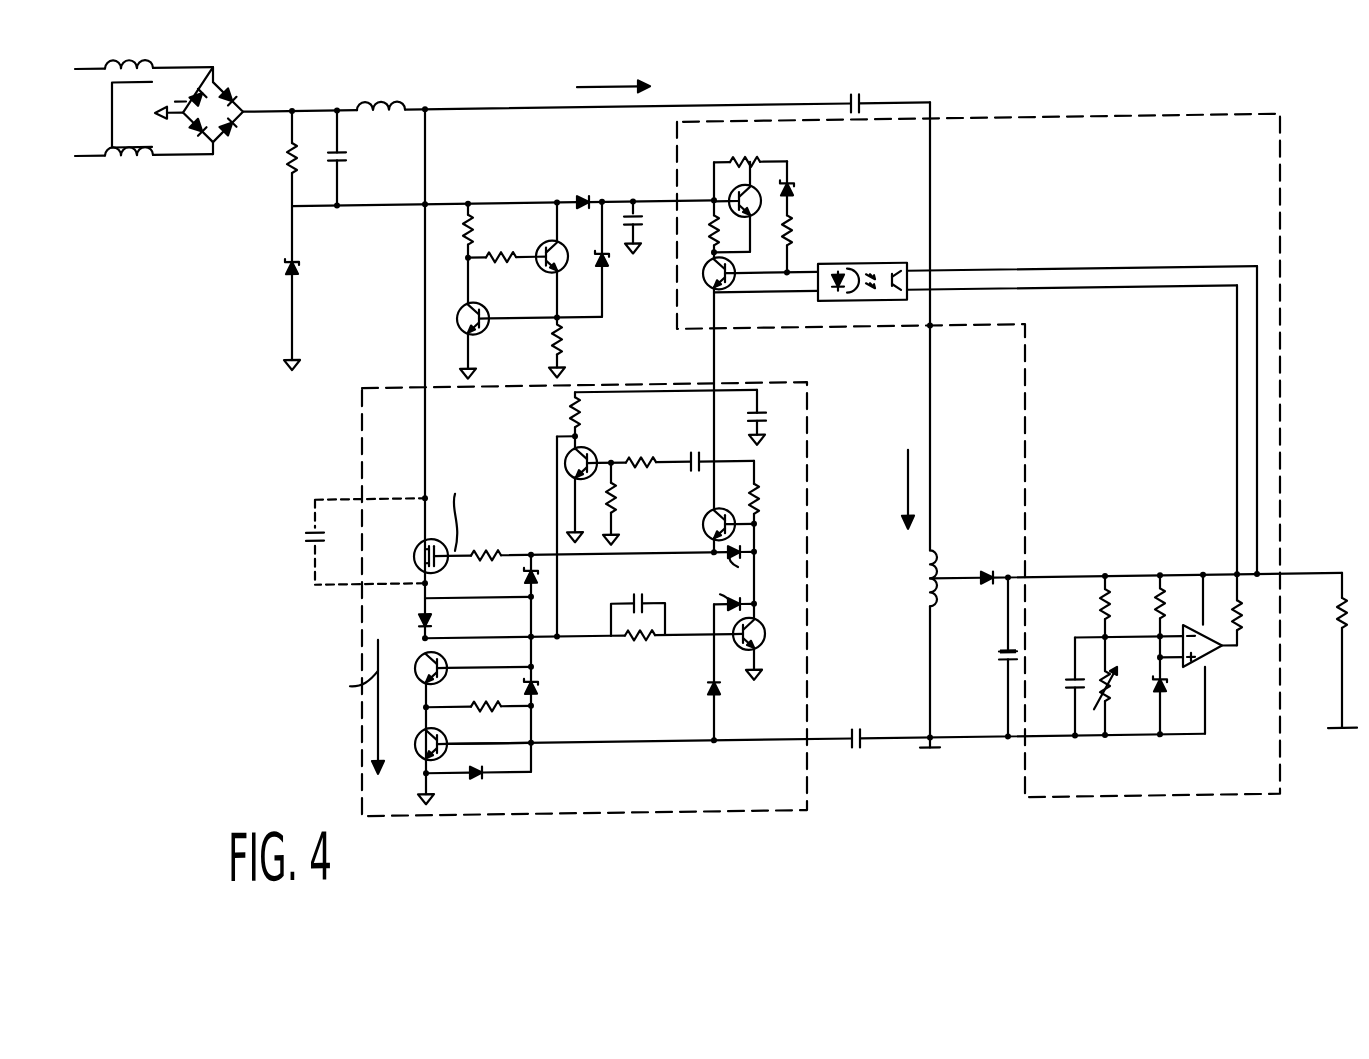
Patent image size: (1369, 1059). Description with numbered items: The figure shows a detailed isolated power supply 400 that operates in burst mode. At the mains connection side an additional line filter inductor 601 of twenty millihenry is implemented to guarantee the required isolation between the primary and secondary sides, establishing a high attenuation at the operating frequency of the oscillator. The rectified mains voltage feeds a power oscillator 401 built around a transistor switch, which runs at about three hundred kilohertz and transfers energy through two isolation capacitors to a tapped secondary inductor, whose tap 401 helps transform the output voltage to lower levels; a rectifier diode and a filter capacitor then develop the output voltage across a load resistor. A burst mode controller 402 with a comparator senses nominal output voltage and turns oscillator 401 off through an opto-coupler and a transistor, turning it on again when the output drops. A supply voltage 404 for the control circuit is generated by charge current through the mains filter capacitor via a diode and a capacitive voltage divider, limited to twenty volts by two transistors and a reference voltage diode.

The power supply 400 is at (598, 887).
The power oscillator 401 is at (732, 823).
The burst mode controller 402 is at (1105, 812).
The supply voltage of the control circuit 404 is at (633, 208).
The line filter inductor 601 is at (126, 68).